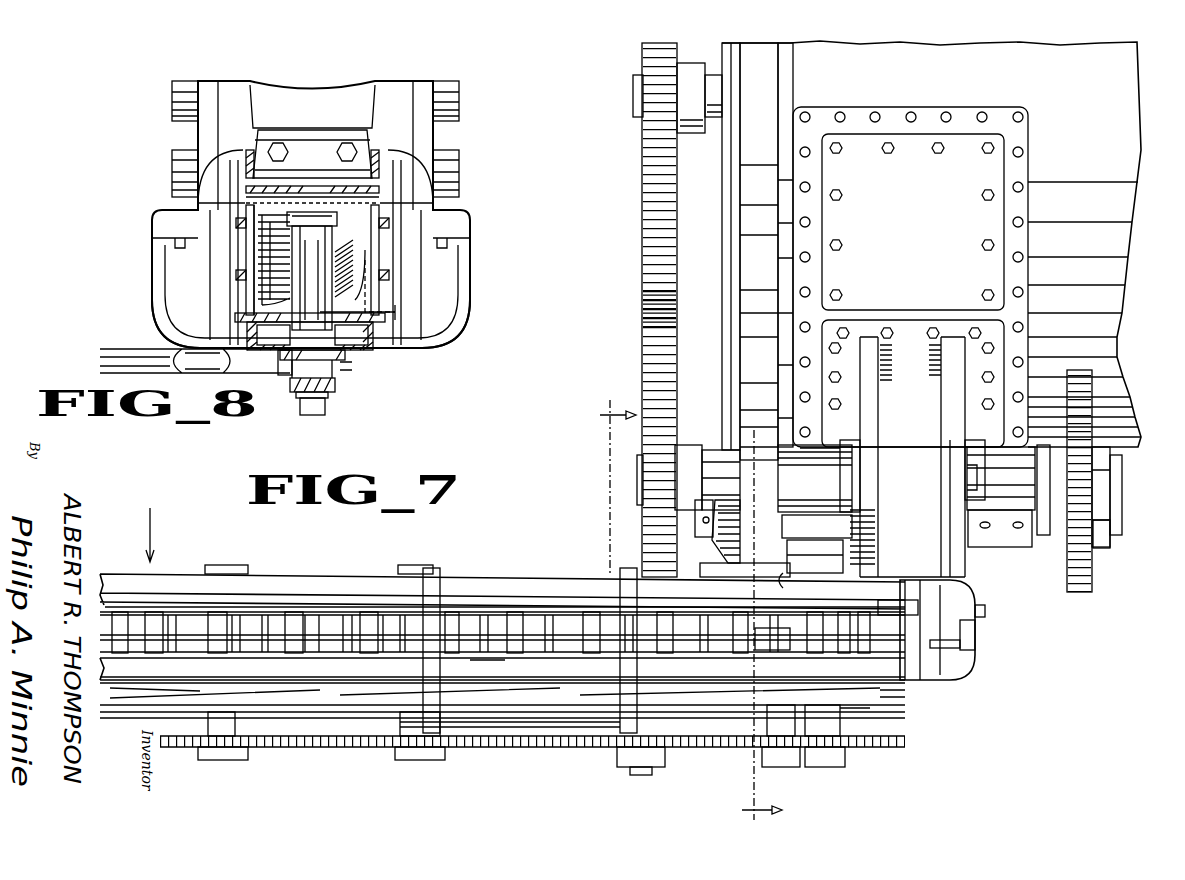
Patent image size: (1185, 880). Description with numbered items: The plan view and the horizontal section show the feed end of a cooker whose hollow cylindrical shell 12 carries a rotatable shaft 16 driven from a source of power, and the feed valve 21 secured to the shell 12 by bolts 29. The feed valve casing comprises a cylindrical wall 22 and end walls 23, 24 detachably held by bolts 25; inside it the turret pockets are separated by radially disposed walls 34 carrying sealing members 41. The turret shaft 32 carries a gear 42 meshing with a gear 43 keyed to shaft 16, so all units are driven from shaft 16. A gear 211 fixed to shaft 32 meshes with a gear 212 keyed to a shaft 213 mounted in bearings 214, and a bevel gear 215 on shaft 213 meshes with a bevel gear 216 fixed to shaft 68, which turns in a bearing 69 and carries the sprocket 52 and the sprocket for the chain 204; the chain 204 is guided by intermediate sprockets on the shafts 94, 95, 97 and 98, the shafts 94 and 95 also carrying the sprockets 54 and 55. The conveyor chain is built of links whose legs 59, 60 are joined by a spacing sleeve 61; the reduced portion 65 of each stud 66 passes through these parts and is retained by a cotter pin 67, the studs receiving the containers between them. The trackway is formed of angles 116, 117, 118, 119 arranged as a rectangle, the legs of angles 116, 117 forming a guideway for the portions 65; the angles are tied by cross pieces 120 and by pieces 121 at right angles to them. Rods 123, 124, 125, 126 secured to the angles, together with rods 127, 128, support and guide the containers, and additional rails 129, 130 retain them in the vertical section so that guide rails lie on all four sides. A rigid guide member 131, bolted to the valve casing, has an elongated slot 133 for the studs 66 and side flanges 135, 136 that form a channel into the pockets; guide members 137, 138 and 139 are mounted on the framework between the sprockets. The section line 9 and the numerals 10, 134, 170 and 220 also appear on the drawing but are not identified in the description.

In FIG. 7, the section line 9 is at (679, 611).
In FIG. 7, the machine 10 is at (151, 532).
In FIG. 7, the hollow cylindrical shell 12 is at (1092, 82).
In FIG. 7, the rotatable shaft 16 is at (633, 95).
In FIG. 8, the feed valve device 21 is at (308, 104).
In FIG. 7, the feed valve device 21 is at (918, 431).
In FIG. 8, the cylindrical wall 22 is at (346, 104).
In FIG. 7, the cylindrical wall 22 is at (910, 345).
In FIG. 8, the end wall 23 is at (435, 137).
In FIG. 7, the end wall 23 is at (980, 462).
In FIG. 8, the end wall 24 is at (195, 137).
In FIG. 7, the end wall 24 is at (845, 462).
In FIG. 7, the bolts 25 is at (975, 445).
In FIG. 7, the bolts 29 is at (830, 375).
In FIG. 7, the shaft 32 is at (637, 478).
In FIG. 8, the radially disposed walls 34 is at (246, 188).
In FIG. 8, the sealing members 41 is at (246, 203).
In FIG. 7, the gear 42 is at (677, 416).
In FIG. 7, the gear 43 is at (648, 296).
In FIG. 8, the sprocket 52 is at (140, 357).
In FIG. 7, the sprocket 54 is at (875, 700).
In FIG. 7, the sprocket 55 is at (502, 668).
In FIG. 8, the side member or leg 59 is at (351, 335).
In FIG. 8, the side member or leg 60 is at (335, 385).
In FIG. 8, the cross member or spacing sleeve 61 is at (302, 374).
In FIG. 8, the reduced portion 65 is at (303, 416).
In FIG. 8, the stud or pin 66 is at (330, 280).
In FIG. 8, the cotter pins 67 is at (328, 396).
In FIG. 7, the shaft 68 is at (767, 715).
In FIG. 7, the bearing 69 is at (790, 650).
In FIG. 7, the shaft 94 is at (825, 768).
In FIG. 7, the shaft 95 is at (218, 762).
In FIG. 7, the shaft 97 is at (415, 762).
In FIG. 7, the shaft 98 is at (640, 776).
In FIG. 8, the angle 116 is at (375, 350).
In FIG. 7, the angle 116 is at (352, 690).
In FIG. 8, the angle 117 is at (245, 322).
In FIG. 8, the angle 118 is at (384, 141).
In FIG. 7, the angle 118 is at (356, 572).
In FIG. 8, the angle 119 is at (248, 150).
In FIG. 7, the cross pieces 120 is at (423, 667).
In FIG. 7, the pieces 121 is at (600, 716).
In FIG. 8, the rod 123 is at (382, 310).
In FIG. 7, the rod 123 is at (880, 668).
In FIG. 8, the rod 124 is at (310, 336).
In FIG. 8, the rod 125 is at (348, 162).
In FIG. 7, the rod 125 is at (877, 602).
In FIG. 8, the rod 126 is at (282, 162).
In FIG. 8, the rod 127 is at (236, 275).
In FIG. 7, the rod 127 is at (560, 660).
In FIG. 8, the rod 128 is at (236, 224).
In FIG. 7, the rod 128 is at (560, 612).
In FIG. 8, the additional rod or rail 129 is at (389, 267).
In FIG. 7, the additional rod or rail 129 is at (960, 644).
In FIG. 8, the additional rod or rail 130 is at (389, 219).
In FIG. 7, the additional rod or rail 130 is at (975, 605).
In FIG. 8, the guide member 131 is at (240, 289).
In FIG. 7, the guide member 131 is at (940, 680).
In FIG. 8, the elongated slot 133 is at (332, 228).
In FIG. 8, the shaft 134 is at (272, 252).
In FIG. 8, the side flange 135 is at (379, 250).
In FIG. 7, the side flange 135 is at (975, 632).
In FIG. 8, the side flange 136 is at (246, 252).
In FIG. 7, the side flange 136 is at (850, 655).
In FIG. 8, the guide member 137 is at (340, 372).
In FIG. 8, the guide member 138 is at (278, 376).
In FIG. 7, the guide member 139 is at (487, 667).
In FIG. 7, the block 170 is at (790, 605).
In FIG. 7, the chain 204 is at (565, 752).
In FIG. 7, the gear 211 is at (1115, 504).
In FIG. 7, the gear 212 is at (1084, 592).
In FIG. 7, the shaft 213 is at (695, 512).
In FIG. 7, the bearings 214 is at (785, 522).
In FIG. 7, the bevel gear 215 is at (718, 545).
In FIG. 7, the bevel gear 216 is at (750, 570).
In FIG. 8, the passage 220 is at (382, 300).